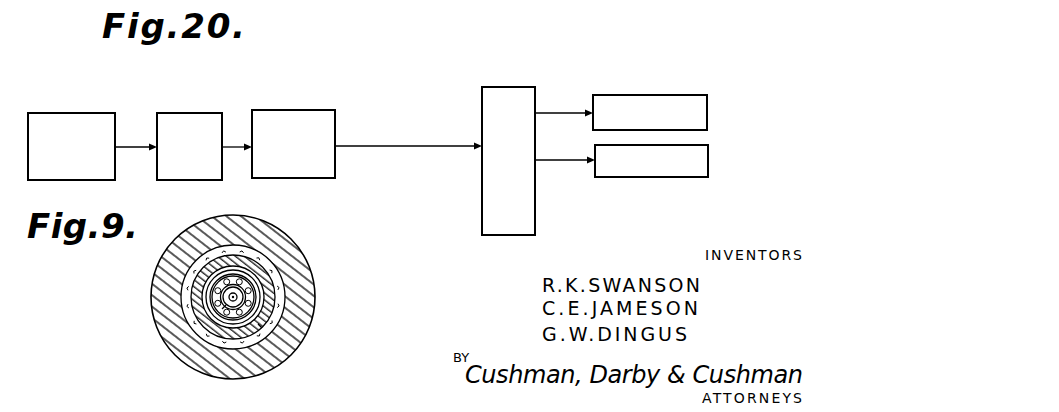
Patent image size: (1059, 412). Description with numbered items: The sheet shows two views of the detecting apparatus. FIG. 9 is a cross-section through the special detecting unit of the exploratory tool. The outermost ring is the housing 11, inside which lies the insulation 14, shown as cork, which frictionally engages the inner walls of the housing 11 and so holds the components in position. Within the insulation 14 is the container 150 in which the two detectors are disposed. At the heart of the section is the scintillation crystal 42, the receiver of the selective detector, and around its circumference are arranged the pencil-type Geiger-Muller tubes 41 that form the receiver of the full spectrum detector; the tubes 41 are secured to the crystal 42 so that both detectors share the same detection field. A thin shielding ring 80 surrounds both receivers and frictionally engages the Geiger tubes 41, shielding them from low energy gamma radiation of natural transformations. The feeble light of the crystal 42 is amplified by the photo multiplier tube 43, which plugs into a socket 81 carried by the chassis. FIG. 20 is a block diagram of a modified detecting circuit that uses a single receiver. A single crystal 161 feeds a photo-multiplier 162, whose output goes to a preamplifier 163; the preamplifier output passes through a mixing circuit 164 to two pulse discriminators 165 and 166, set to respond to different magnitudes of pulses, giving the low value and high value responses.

In FIG. 20, the crystal 161 is at (67, 118).
In FIG. 20, the photo-multiplier 162 is at (191, 117).
In FIG. 20, the preamplifier 163 is at (287, 120).
In FIG. 20, the mixing circuit 164 is at (503, 92).
In FIG. 20, the pulse discriminator 165 is at (707, 110).
In FIG. 20, the pulse discriminator 166 is at (698, 154).
In FIG. 9, the housing 11 is at (252, 228).
In FIG. 9, the insulation 14 is at (186, 296).
In FIG. 9, the container 150 is at (248, 268).
In FIG. 9, the socket 81 is at (244, 272).
In FIG. 9, the photo multiplier tube 43 is at (252, 285).
In FIG. 9, the shielding ring 80 is at (244, 298).
In FIG. 9, the scintillation crystal 42 is at (222, 309).
In FIG. 9, the pencil-type Geiger-Muller tubes 41 is at (270, 342).